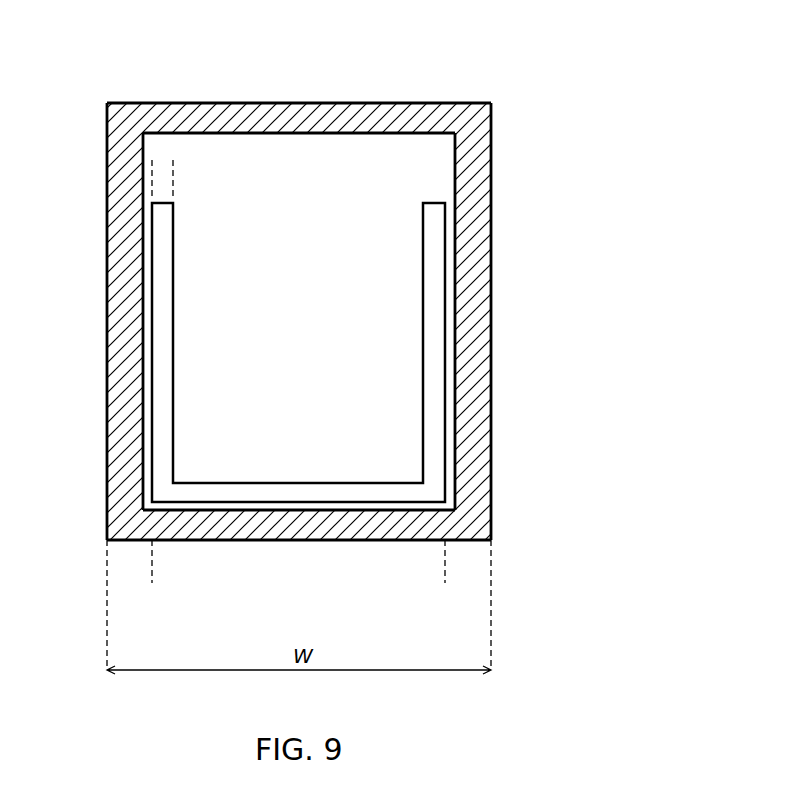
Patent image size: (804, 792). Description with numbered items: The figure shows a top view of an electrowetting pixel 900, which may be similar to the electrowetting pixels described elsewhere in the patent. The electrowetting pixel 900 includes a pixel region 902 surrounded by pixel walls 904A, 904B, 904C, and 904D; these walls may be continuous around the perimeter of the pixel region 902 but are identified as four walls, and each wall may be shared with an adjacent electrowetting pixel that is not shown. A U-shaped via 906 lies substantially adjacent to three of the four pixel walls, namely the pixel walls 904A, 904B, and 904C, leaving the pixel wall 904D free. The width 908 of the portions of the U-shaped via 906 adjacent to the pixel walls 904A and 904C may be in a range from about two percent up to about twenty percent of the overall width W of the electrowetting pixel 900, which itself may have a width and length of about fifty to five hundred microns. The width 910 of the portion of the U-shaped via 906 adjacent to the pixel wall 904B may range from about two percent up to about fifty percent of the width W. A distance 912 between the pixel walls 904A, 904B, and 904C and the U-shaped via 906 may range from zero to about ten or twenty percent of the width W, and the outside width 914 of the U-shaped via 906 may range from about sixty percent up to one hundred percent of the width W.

The electrowetting pixel 900 is at (542, 70).
The pixel region 902 is at (320, 276).
The pixel wall 904A is at (491, 403).
The pixel wall 904B is at (448, 542).
The pixel wall 904C is at (107, 475).
The pixel wall 904D is at (226, 103).
The U-shaped via 906 is at (441, 275).
The width 908 is at (95, 195).
The width 910 is at (202, 558).
The distance 912 is at (85, 329).
The outside width 914 is at (437, 587).